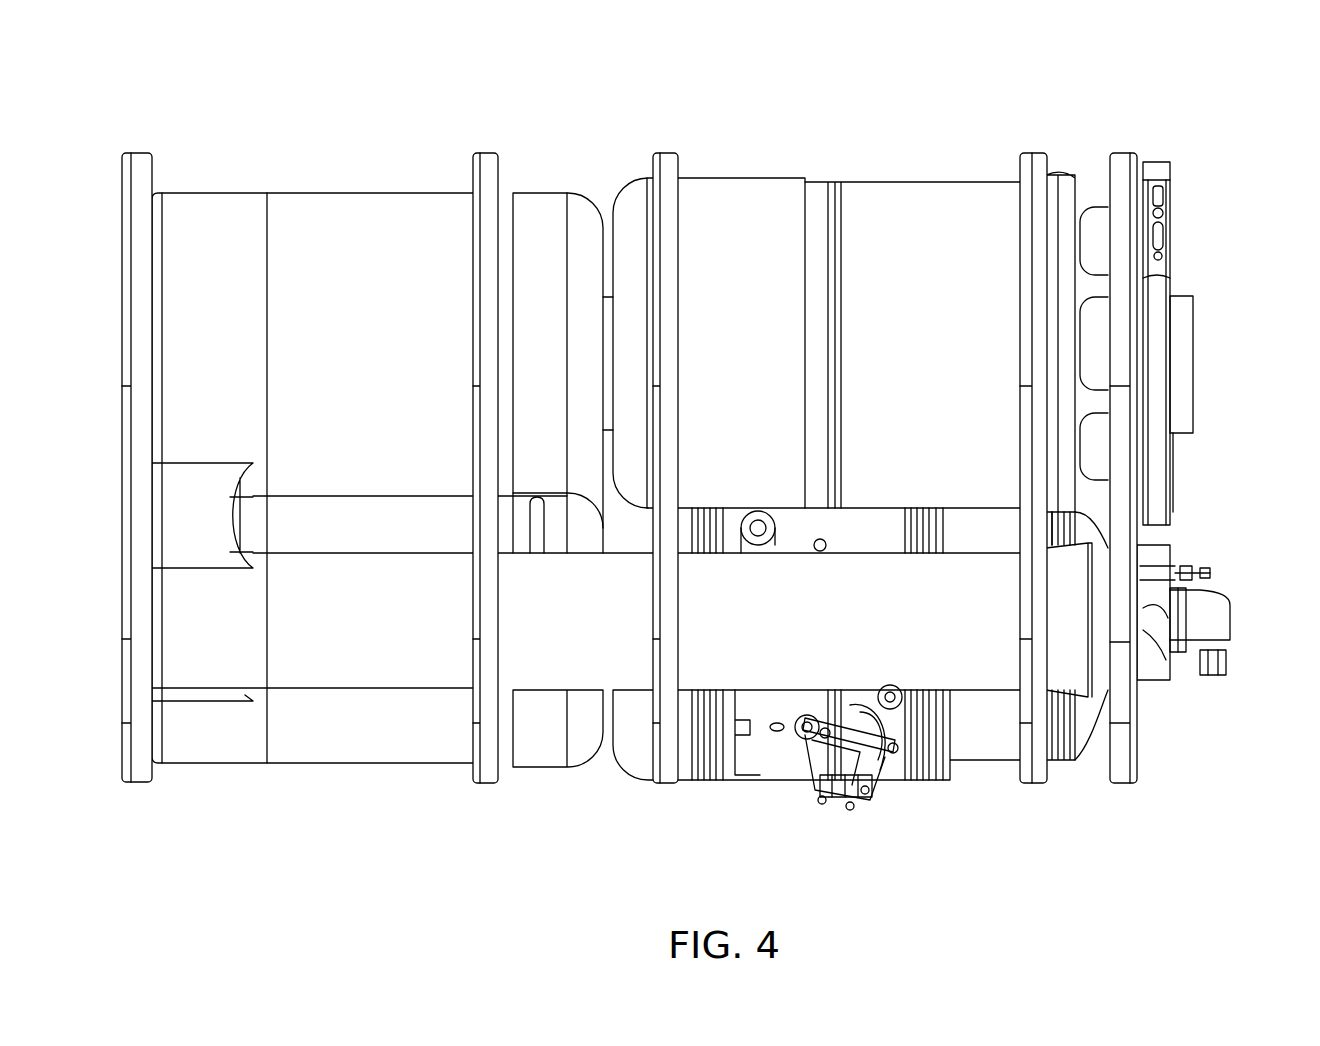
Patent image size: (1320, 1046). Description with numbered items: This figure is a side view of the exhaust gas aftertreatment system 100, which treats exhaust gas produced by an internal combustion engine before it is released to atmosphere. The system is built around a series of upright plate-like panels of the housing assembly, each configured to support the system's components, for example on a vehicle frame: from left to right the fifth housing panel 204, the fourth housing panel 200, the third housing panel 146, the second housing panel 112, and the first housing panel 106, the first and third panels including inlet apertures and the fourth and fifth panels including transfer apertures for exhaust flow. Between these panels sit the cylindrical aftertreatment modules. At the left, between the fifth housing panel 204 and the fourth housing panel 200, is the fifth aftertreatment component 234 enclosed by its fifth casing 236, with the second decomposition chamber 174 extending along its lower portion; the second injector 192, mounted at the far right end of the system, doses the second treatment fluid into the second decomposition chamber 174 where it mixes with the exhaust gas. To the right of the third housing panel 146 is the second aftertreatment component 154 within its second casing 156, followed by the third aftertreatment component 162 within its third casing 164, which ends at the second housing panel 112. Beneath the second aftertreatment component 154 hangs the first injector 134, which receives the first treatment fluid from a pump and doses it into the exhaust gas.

The exhaust gas aftertreatment system 100 is at (1157, 126).
The first housing panel 106 is at (1118, 762).
The second housing panel 112 is at (1032, 770).
The first injector 134 is at (853, 790).
The third housing panel 146 is at (665, 770).
The second aftertreatment component 154 is at (762, 222).
The second casing 156 is at (775, 190).
The third aftertreatment component 162 is at (962, 222).
The third casing 164 is at (998, 193).
The second decomposition chamber 174 is at (345, 632).
The second injector 192 is at (1217, 618).
The fourth housing panel 200 is at (493, 770).
The fifth housing panel 204 is at (140, 768).
The fifth aftertreatment component 234 is at (325, 225).
The fifth casing 236 is at (437, 267).